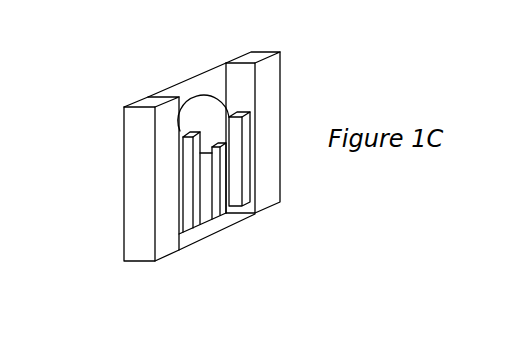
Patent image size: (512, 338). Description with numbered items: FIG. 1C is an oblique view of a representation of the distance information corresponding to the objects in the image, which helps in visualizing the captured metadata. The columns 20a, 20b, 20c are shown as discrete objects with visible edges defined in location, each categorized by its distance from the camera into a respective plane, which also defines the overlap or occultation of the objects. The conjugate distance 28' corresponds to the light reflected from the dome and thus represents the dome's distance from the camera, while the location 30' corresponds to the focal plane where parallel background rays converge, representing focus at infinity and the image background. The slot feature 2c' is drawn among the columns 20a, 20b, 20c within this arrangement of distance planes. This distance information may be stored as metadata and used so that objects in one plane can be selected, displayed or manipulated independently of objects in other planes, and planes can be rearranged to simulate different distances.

The column 20a is at (272, 79).
The column 20b is at (187, 230).
The column 20c is at (223, 203).
The slot insert 2c' is at (220, 202).
The conjugate distance location for dome rays 28' is at (189, 86).
The conjugate distance location for background rays 30' is at (187, 62).